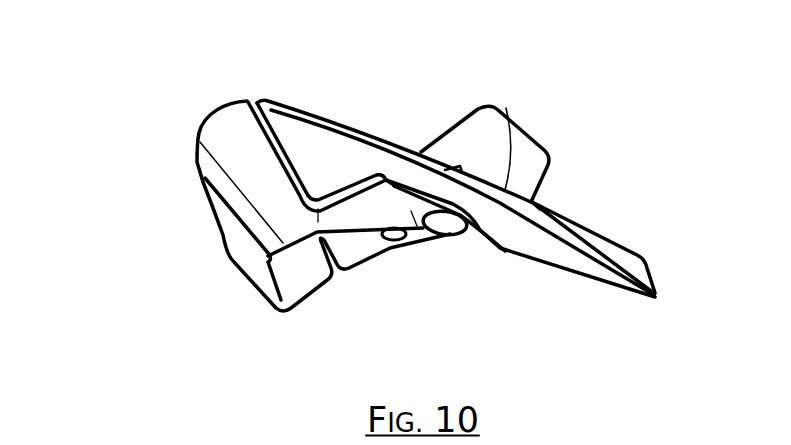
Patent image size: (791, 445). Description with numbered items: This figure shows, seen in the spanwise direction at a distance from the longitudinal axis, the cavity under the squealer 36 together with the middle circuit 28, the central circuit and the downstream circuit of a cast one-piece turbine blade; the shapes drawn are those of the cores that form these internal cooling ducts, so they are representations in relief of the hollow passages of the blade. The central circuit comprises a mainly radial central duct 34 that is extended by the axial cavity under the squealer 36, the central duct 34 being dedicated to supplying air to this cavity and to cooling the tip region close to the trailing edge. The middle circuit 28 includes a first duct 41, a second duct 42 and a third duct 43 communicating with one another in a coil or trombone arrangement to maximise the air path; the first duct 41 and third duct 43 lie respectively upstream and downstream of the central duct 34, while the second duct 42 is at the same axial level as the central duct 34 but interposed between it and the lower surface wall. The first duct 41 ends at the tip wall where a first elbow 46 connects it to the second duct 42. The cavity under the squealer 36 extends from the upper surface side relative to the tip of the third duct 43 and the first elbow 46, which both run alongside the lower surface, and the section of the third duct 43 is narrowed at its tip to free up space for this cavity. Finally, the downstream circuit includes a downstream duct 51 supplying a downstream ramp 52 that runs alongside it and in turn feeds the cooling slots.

The middle circuit 28 is at (152, 171).
The central duct 34 is at (299, 102).
The cavity under the squealer 36 is at (523, 242).
The first duct 41 is at (247, 252).
The second duct 42 is at (367, 245).
The third duct 43 is at (450, 233).
The first elbow 46 is at (317, 223).
The downstream duct 51 is at (519, 142).
The downstream ramp 52 is at (596, 234).